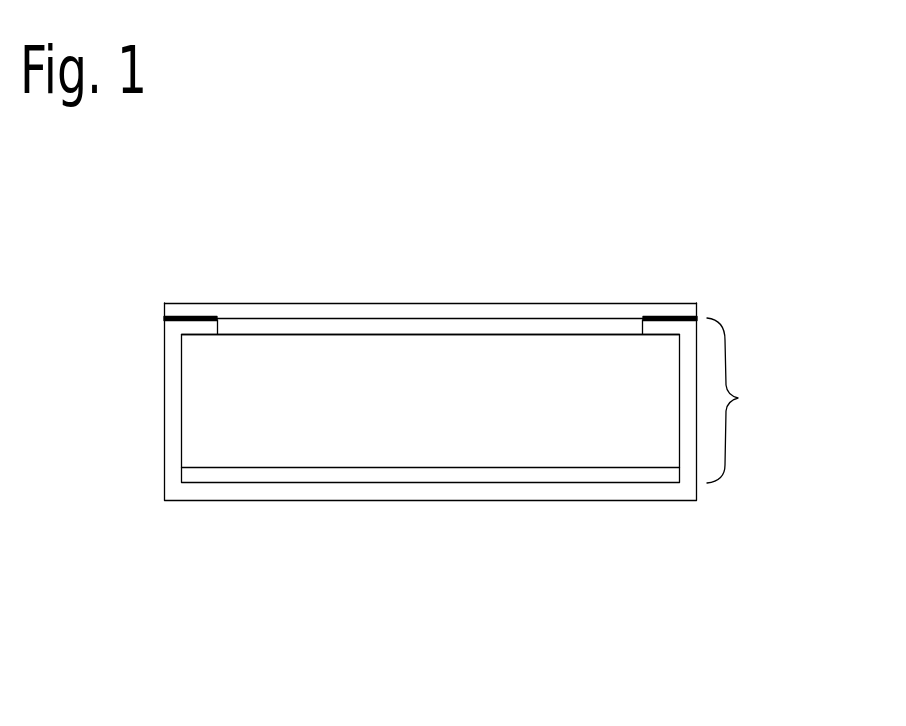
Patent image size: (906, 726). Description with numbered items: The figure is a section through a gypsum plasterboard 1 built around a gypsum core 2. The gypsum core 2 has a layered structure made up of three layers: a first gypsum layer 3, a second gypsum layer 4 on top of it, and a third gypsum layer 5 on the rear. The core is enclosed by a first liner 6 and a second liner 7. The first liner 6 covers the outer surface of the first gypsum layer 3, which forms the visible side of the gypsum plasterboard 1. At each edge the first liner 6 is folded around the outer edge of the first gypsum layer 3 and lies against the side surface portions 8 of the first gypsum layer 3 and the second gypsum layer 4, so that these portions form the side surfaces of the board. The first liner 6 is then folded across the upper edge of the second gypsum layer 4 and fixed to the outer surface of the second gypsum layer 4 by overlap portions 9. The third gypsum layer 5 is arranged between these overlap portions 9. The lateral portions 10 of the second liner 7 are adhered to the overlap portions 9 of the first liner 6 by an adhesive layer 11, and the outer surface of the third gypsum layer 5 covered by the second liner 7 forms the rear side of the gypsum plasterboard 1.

The gypsum plasterboard 1 is at (144, 690).
The gypsum core 2 is at (737, 400).
The first gypsum layer 3 is at (278, 475).
The second gypsum layer 4 is at (498, 430).
The third gypsum layer 5 is at (565, 327).
The first liner 6 is at (392, 490).
The second liner 7 is at (460, 310).
The side surface portions 8 is at (180, 430).
The overlap portions 9 is at (200, 325).
The lateral portions 10 is at (190, 310).
The adhesive layer 11 is at (700, 313).